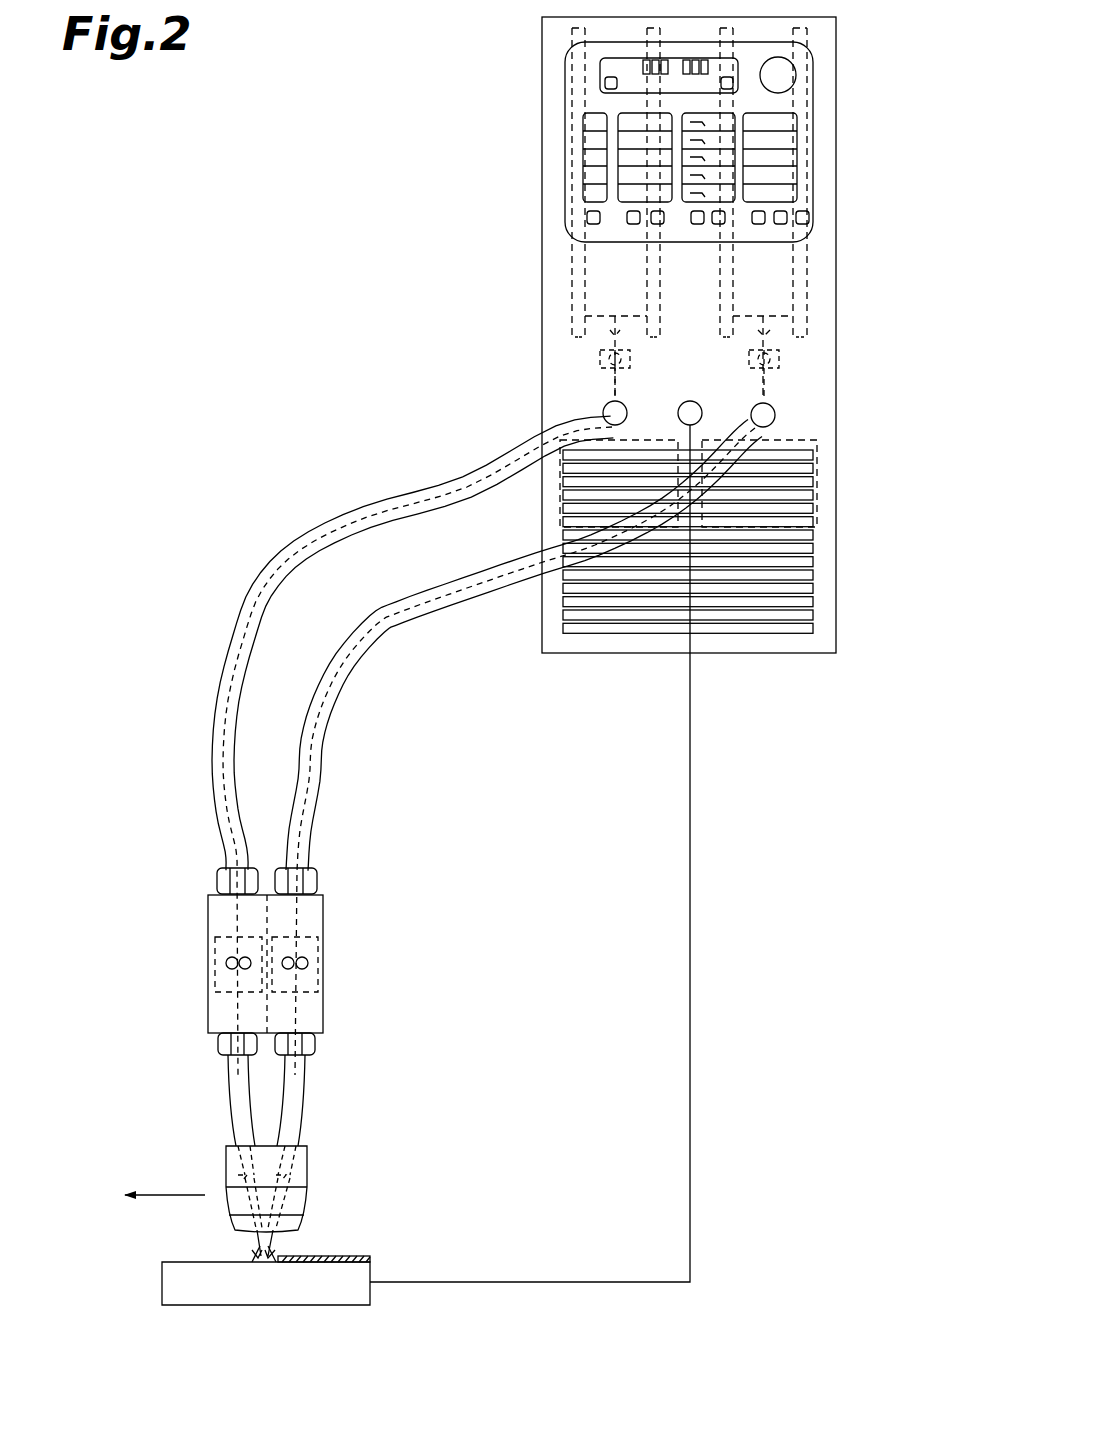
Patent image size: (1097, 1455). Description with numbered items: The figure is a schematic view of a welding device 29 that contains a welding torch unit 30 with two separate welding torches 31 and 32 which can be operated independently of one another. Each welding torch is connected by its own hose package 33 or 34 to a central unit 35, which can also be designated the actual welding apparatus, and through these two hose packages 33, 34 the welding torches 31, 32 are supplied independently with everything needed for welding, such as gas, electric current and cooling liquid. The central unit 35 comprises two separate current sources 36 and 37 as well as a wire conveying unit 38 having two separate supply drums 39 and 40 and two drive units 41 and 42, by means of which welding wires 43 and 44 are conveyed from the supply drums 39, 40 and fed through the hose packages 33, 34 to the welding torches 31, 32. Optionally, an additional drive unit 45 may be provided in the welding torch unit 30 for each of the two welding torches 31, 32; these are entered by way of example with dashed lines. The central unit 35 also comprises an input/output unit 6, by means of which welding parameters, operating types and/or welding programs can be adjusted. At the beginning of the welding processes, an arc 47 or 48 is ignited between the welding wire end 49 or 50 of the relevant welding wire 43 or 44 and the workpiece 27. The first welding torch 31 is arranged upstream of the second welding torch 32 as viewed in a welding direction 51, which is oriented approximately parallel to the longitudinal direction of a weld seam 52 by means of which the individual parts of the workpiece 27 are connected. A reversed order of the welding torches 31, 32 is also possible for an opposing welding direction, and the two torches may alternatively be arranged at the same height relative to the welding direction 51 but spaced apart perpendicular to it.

The input/output unit 6 is at (588, 142).
The workpiece 27 is at (198, 1295).
The welding device 29 is at (363, 300).
The welding torch unit 30 is at (328, 961).
The first welding torch 31 is at (233, 1075).
The second welding torch 32 is at (298, 1075).
The hose package 33 is at (425, 497).
The hose package 34 is at (410, 620).
The central unit 35 is at (488, 35).
The current source 36 is at (600, 433).
The current source 37 is at (820, 443).
The wire conveying unit 38 is at (512, 212).
The supply drum 39 is at (605, 282).
The supply drum 40 is at (768, 285).
The drive unit 41 is at (600, 365).
The drive unit 42 is at (778, 362).
The welding wire 43 is at (608, 330).
The welding wire 44 is at (768, 330).
The additional drive unit 45 is at (228, 963).
The arc 47 is at (255, 1248).
The arc 48 is at (280, 1248).
The welding wire end 49 is at (255, 1232).
The welding wire end 50 is at (278, 1232).
The welding direction 51 is at (186, 1188).
The weld seam 52 is at (320, 1265).